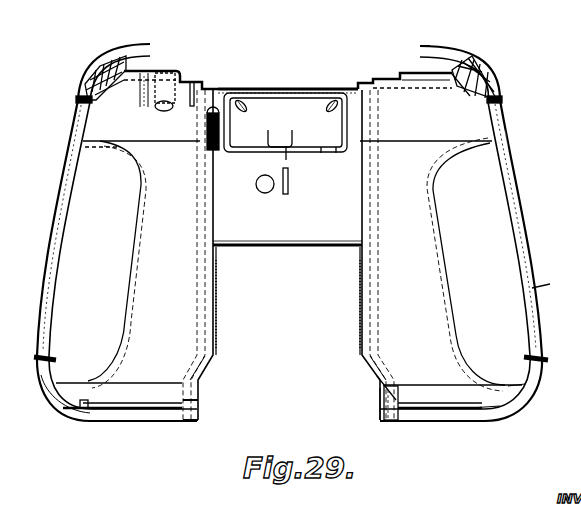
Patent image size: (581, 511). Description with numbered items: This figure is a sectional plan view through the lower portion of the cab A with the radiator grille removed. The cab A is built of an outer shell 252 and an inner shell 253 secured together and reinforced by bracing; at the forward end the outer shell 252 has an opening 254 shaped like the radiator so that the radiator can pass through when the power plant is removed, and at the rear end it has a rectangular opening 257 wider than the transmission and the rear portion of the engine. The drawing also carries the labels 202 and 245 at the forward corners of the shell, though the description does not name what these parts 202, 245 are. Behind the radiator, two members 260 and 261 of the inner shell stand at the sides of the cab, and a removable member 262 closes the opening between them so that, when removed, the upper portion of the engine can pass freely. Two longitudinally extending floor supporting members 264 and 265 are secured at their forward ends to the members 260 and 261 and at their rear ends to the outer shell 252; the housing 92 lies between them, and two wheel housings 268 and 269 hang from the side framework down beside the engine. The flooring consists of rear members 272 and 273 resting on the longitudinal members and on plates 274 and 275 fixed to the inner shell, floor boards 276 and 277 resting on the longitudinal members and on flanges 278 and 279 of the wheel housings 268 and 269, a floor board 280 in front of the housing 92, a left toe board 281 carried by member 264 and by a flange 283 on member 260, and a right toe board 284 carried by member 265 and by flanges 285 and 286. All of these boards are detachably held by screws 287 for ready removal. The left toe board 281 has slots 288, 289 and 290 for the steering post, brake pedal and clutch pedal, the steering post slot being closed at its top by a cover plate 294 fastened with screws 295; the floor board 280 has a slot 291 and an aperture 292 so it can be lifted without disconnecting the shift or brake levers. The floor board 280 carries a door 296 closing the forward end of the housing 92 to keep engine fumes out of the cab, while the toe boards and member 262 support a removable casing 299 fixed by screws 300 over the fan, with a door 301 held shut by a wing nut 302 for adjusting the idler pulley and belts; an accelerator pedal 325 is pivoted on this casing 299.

The upper left clamp 202 is at (78, 100).
The right corner gusset 245 is at (470, 88).
The outer shell 252 is at (512, 406).
The inner shell 253 is at (467, 408).
The opening 254 is at (397, 44).
The rectangular opening 257 is at (358, 426).
The member 260 is at (187, 86).
The member 261 is at (395, 78).
The removable member 262 is at (293, 74).
The floor supporting member 264 is at (205, 278).
The floor supporting member 265 is at (372, 258).
The wheel housing 268 is at (78, 235).
The wheel housing 269 is at (495, 216).
The rear floor member 272 is at (137, 398).
The rear floor member 273 is at (432, 400).
The plate 274 is at (66, 404).
The plate 275 is at (528, 392).
The floor board 276 is at (202, 354).
The floor board 277 is at (365, 347).
The flange 278 is at (126, 316).
The flange 279 is at (452, 299).
The floor board 280 is at (335, 238).
The toe board 281 is at (98, 120).
The flange 283 is at (140, 75).
The toe board 284 is at (468, 118).
The flange 285 is at (495, 123).
The flange 286 is at (432, 75).
The screws 287 is at (124, 328).
The slot 288 is at (163, 113).
The slot 289 is at (192, 107).
The slot 290 is at (141, 95).
The slot 291 is at (289, 188).
The aperture 292 is at (266, 192).
The cover plate 294 is at (170, 72).
The screws 295 is at (158, 107).
The door 296 is at (296, 228).
The removable casing 299 is at (353, 92).
The screws 300 is at (252, 152).
The door 301 is at (325, 150).
The wing nut 302 is at (290, 150).
The accelerator pedal 325 is at (206, 146).
The housing 92 is at (218, 314).
The cab A is at (548, 284).